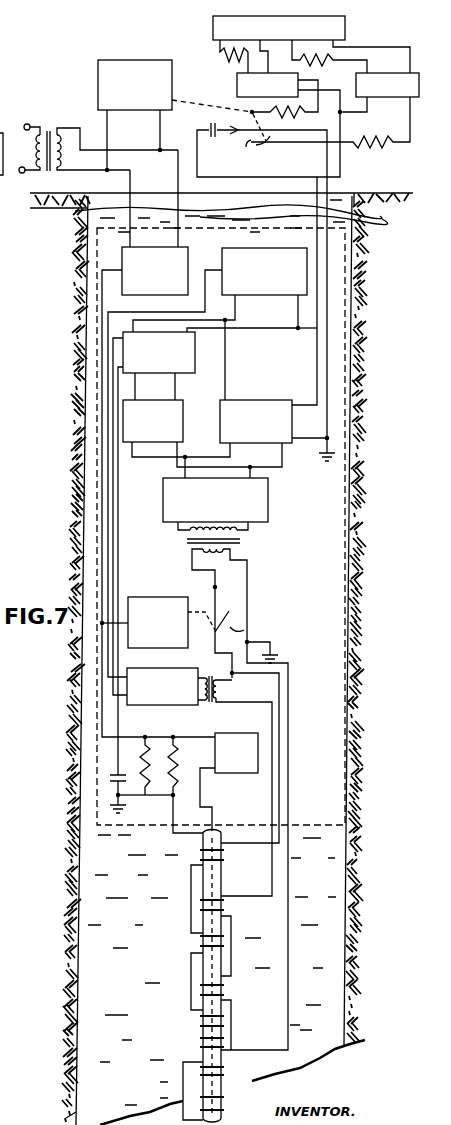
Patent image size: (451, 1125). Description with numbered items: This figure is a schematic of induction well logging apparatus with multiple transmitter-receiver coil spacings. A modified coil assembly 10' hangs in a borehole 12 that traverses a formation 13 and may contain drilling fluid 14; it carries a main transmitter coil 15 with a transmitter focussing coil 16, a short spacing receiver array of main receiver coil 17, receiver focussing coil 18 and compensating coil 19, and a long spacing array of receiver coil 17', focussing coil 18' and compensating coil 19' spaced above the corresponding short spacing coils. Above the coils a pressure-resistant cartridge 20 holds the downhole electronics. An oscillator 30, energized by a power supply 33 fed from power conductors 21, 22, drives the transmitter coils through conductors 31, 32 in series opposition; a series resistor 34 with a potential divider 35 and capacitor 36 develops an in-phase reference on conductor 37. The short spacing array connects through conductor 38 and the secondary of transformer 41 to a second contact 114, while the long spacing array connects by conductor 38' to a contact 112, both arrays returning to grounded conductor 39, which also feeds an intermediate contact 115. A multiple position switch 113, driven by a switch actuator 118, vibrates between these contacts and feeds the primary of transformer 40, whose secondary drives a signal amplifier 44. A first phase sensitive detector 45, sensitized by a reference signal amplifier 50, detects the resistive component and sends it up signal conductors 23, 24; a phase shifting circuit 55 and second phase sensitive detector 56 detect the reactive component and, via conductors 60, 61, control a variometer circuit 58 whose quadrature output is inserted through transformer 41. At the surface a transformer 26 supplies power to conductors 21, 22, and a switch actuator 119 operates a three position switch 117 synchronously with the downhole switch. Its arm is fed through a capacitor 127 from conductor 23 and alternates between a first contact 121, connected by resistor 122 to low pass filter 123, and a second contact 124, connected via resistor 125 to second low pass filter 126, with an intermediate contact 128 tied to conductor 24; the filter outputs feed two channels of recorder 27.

The recorder 27 is at (345, 29).
The switch actuator 119 is at (147, 59).
The transformer 26 is at (50, 126).
The power conductor 21 is at (133, 178).
The power conductor 22 is at (175, 176).
The low pass filter 123 is at (237, 80).
The second low pass filter 126 is at (393, 73).
The resistor 122 is at (300, 113).
The resistor 125 is at (386, 146).
The first contact 121 is at (252, 110).
The capacitor 127 is at (211, 124).
The three position switch 117 is at (233, 142).
The second contact 124 is at (250, 144).
The intermediate contact 128 is at (270, 142).
The power supply 33 is at (188, 258).
The reference signal amplifier 50 is at (276, 308).
The second phase sensitive detector 56 is at (196, 362).
The phase shifting circuit 55 is at (183, 408).
The first phase sensitive detector 45 is at (262, 398).
The signal conductor 23 is at (316, 336).
The signal conductor 24 is at (326, 372).
The signal amplifier 44 is at (268, 504).
The transformer 40 is at (245, 541).
The conductor 60 is at (116, 516).
The conductor 61 is at (118, 562).
The switch actuator 118 is at (166, 596).
The contact 112 is at (210, 596).
The multiple position switch 113 is at (218, 604).
The contact 115 is at (220, 626).
The second contact 114 is at (244, 628).
The variometer circuit 58 is at (190, 714).
The transformer 41 is at (208, 704).
The potential divider 35 is at (147, 744).
The resistor 34 is at (177, 770).
The conductor 37 is at (118, 752).
The capacitor 36 is at (116, 790).
The conductor 31 is at (172, 810).
The conductor 32 is at (213, 820).
The oscillator 30 is at (222, 780).
The conductor 38' is at (268, 846).
The conductor 39 is at (281, 758).
The conductor 38 is at (267, 799).
The formation 13 is at (378, 491).
The pressure-resistant cartridge 20 is at (346, 632).
The borehole 12 is at (86, 1008).
The drilling fluid 14 is at (110, 1063).
The main transmitter coil 15 is at (224, 1102).
The modified coil assembly 10' is at (231, 976).
The focussing coil 18' is at (224, 891).
The receiver focussing coil 18 is at (229, 938).
The receiver coil 17' is at (188, 973).
The main receiver coil 17 is at (230, 990).
The compensating coil 19' is at (188, 1022).
The compensating coil 19 is at (191, 1045).
The transmitter focussing coil 16 is at (224, 1068).